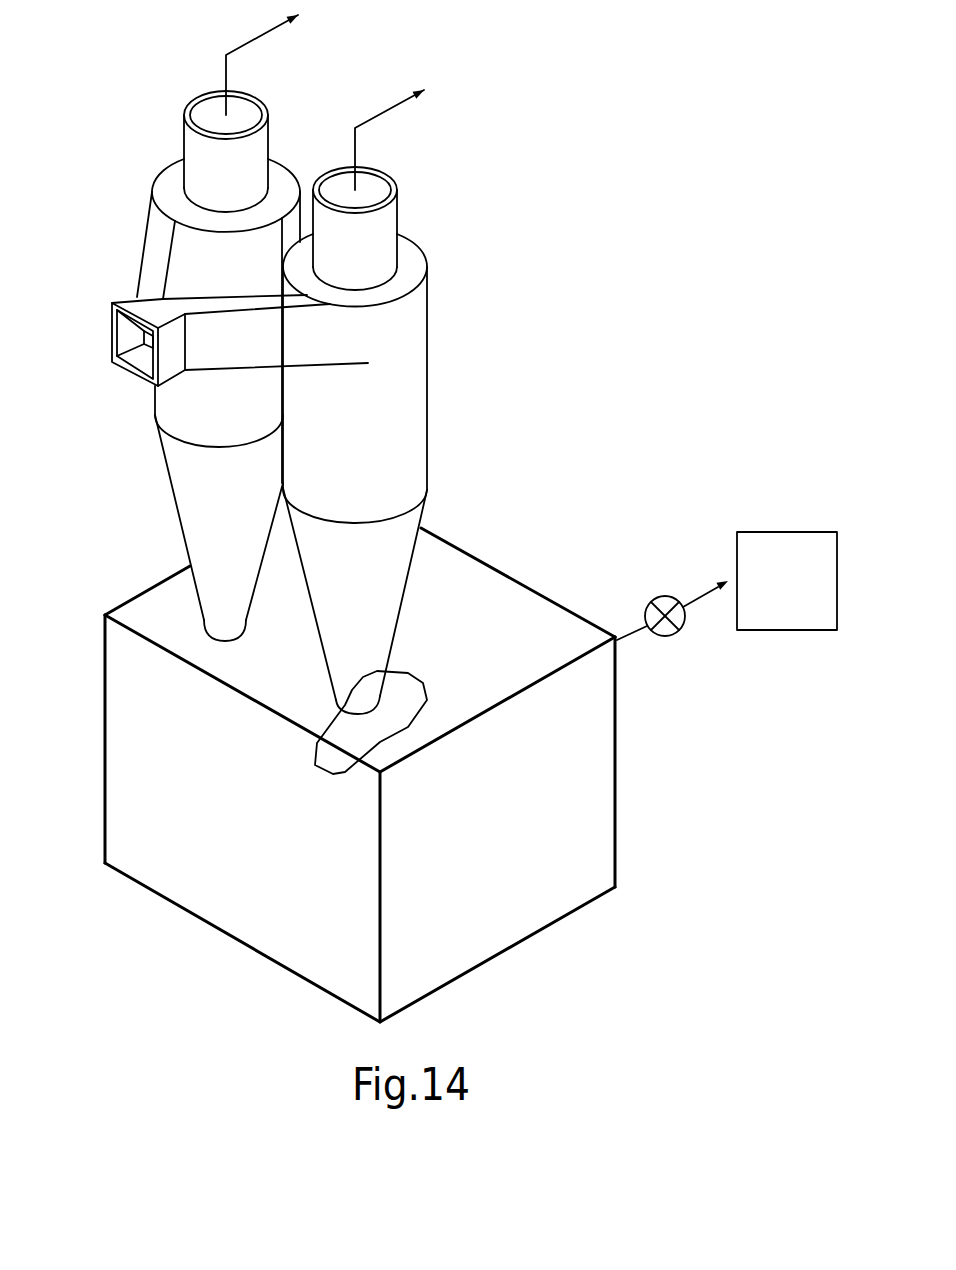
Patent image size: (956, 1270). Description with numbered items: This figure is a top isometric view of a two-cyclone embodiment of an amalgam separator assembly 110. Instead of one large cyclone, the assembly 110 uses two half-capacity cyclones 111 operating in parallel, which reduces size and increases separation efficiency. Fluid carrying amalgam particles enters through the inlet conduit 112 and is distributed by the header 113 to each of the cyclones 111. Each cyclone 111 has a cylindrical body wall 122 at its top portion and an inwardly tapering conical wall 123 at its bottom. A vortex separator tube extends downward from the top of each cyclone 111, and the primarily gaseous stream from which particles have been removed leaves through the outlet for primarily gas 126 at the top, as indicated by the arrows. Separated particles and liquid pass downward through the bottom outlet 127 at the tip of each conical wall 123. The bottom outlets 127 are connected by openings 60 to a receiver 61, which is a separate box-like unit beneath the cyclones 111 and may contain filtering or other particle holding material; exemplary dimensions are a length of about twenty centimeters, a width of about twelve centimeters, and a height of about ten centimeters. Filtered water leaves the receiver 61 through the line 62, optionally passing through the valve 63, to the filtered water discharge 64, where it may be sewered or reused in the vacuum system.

The assembly 110 is at (522, 85).
The cyclone 111 is at (143, 428).
The inlet conduit 112 is at (143, 300).
The header 113 is at (330, 302).
The cylindrical body wall 122 is at (403, 410).
The conical wall 123 is at (205, 537).
The outlet for primarily gas 126 is at (200, 113).
The bottom outlet 127 is at (350, 760).
The opening 60 is at (343, 702).
The receiver 61 is at (511, 899).
The line 62 is at (637, 637).
The valve 63 is at (647, 613).
The filtered water discharge 64 is at (757, 532).